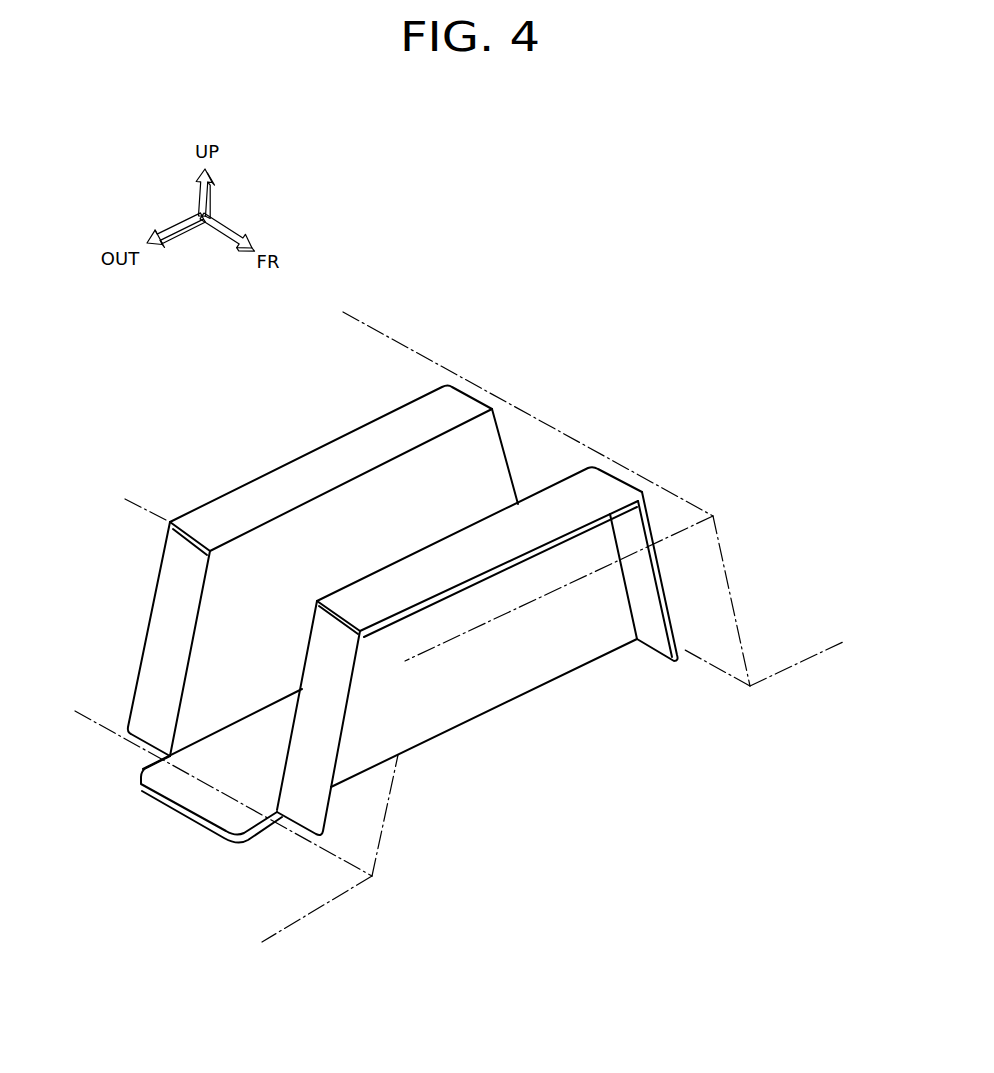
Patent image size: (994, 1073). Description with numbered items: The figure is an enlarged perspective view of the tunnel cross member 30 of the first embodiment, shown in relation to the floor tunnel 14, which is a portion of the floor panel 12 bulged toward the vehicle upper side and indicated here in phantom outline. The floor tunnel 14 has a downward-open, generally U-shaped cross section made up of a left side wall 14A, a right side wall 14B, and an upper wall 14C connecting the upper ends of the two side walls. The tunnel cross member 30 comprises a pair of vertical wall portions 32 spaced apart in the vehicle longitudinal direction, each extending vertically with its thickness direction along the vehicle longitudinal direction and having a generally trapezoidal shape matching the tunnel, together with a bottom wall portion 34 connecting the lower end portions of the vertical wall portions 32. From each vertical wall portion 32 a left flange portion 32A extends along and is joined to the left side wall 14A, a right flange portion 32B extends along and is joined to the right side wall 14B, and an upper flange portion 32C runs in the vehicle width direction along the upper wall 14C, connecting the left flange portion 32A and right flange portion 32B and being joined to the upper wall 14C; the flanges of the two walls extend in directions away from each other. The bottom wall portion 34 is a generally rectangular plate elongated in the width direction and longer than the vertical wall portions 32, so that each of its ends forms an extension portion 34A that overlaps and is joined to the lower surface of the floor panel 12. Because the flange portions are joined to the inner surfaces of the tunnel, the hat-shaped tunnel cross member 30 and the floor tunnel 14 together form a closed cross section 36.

The floor panel 12 is at (787, 673).
The floor tunnel 14 is at (403, 345).
The left side wall 14A is at (732, 600).
The right side wall 14B is at (388, 823).
The upper wall 14C is at (523, 608).
The tunnel cross member 30 is at (537, 447).
The vertical wall portion 32 is at (429, 617).
The left flange portion 32A is at (665, 580).
The right flange portion 32B is at (157, 668).
The upper flange portion 32C is at (240, 507).
The bottom wall portion 34 is at (177, 815).
The extension portion 34A is at (155, 782).
The closed cross section 36 is at (403, 524).